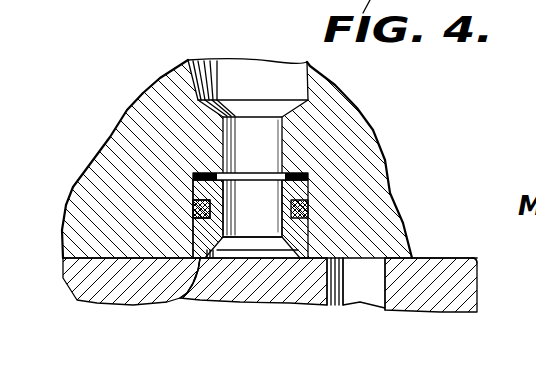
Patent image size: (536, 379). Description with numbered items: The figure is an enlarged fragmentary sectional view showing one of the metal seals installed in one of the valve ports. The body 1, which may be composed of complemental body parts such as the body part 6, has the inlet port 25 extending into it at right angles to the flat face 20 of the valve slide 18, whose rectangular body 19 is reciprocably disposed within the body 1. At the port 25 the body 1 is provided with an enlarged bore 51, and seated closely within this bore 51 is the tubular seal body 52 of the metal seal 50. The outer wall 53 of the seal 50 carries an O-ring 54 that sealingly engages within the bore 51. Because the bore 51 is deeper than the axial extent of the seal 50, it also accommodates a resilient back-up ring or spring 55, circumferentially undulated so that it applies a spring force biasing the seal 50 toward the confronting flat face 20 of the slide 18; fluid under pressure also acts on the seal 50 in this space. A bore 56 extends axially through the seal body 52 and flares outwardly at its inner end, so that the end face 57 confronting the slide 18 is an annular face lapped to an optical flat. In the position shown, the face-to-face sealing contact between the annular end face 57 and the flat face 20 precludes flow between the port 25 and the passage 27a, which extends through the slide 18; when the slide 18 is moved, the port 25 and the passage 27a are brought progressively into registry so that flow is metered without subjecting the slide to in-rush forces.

The body 1 is at (360, 97).
The body part 6 is at (68, 190).
The valve slide 18 is at (480, 257).
The rectangular body 19 is at (80, 280).
The flat face 20 is at (270, 277).
The port 25 is at (268, 82).
The passage 27a is at (357, 307).
The metal seal 50 is at (266, 185).
The enlarged bore 51 is at (312, 194).
The tubular seal body 52 is at (195, 232).
The outer wall 53 is at (192, 190).
The O-ring 54 is at (192, 207).
The resilient back-up ring or spring 55 is at (212, 172).
The bore 56 is at (270, 222).
The end face 57 is at (176, 299).